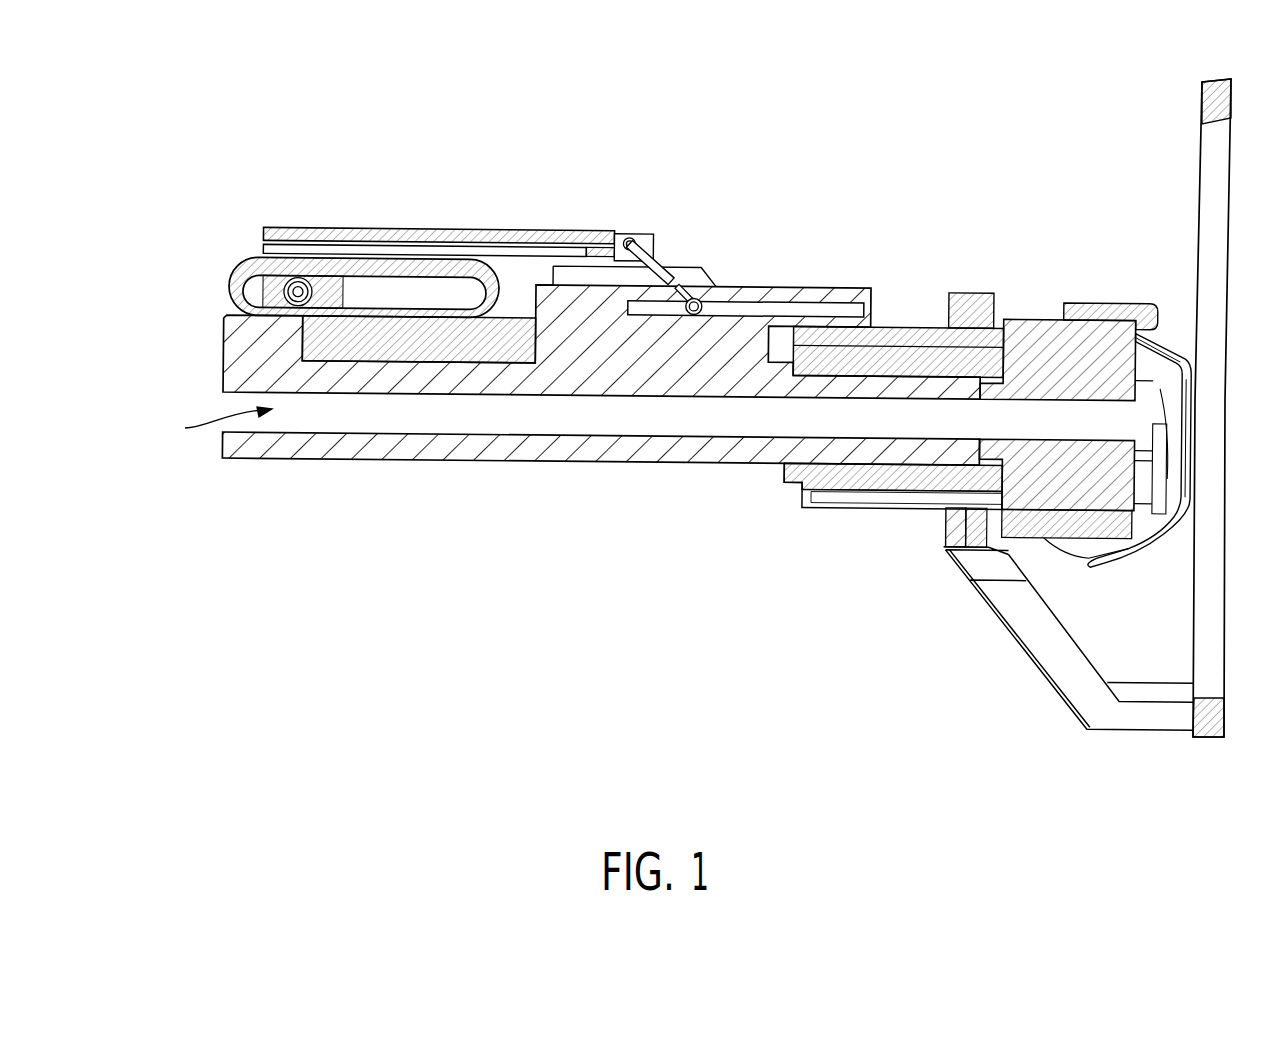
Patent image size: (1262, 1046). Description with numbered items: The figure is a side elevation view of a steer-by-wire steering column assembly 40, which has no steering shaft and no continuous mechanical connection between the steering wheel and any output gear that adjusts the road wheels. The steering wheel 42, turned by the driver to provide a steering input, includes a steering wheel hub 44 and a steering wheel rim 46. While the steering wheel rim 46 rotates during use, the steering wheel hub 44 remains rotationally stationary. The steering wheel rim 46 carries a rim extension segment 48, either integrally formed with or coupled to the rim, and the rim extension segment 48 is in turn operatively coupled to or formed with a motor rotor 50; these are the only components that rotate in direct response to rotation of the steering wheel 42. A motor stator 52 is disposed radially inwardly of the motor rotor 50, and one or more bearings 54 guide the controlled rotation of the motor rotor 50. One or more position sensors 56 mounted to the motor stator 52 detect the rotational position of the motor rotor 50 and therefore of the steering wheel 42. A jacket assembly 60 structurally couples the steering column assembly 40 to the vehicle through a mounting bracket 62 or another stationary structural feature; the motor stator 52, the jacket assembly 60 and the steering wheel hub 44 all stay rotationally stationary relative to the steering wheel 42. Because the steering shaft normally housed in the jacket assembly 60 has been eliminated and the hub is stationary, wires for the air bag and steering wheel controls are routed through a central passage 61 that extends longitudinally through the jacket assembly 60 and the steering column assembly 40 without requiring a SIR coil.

The steering column assembly 40 is at (397, 152).
The steering wheel 42 is at (1083, 668).
The steering wheel hub 44 is at (1057, 342).
The steering wheel rim 46 is at (1215, 100).
The rim extension segment 48 is at (1057, 645).
The motor rotor 50 is at (862, 498).
The motor stator 52 is at (898, 358).
The bearing 54 is at (810, 340).
The position sensor 56 is at (793, 473).
The jacket assembly 60 is at (430, 478).
The central passage 61 is at (216, 426).
The mounting bracket 62 is at (547, 240).